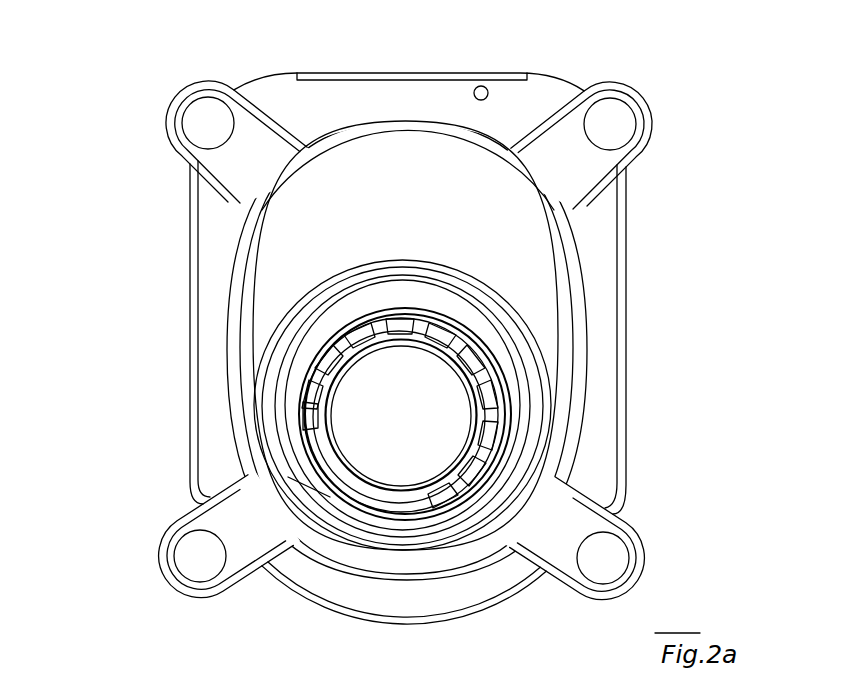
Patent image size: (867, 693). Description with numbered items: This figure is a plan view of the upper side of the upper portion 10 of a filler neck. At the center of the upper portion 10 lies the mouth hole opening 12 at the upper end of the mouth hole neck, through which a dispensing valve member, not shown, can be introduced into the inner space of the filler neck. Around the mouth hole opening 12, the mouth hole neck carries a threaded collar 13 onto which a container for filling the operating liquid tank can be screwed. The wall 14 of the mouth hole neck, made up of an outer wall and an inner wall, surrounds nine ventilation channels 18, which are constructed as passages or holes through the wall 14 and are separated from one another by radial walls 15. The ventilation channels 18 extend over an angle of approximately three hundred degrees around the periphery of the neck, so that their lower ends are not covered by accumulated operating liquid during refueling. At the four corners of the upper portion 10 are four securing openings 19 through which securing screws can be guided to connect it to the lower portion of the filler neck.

The upper portion 10 is at (96, 109).
The mouth hole opening 12 is at (428, 408).
The threaded collar 13 is at (293, 360).
The wall 14 is at (308, 427).
The radial walls 15 is at (320, 382).
The ventilation channels 18 is at (478, 359).
The securing openings 19 is at (618, 135).